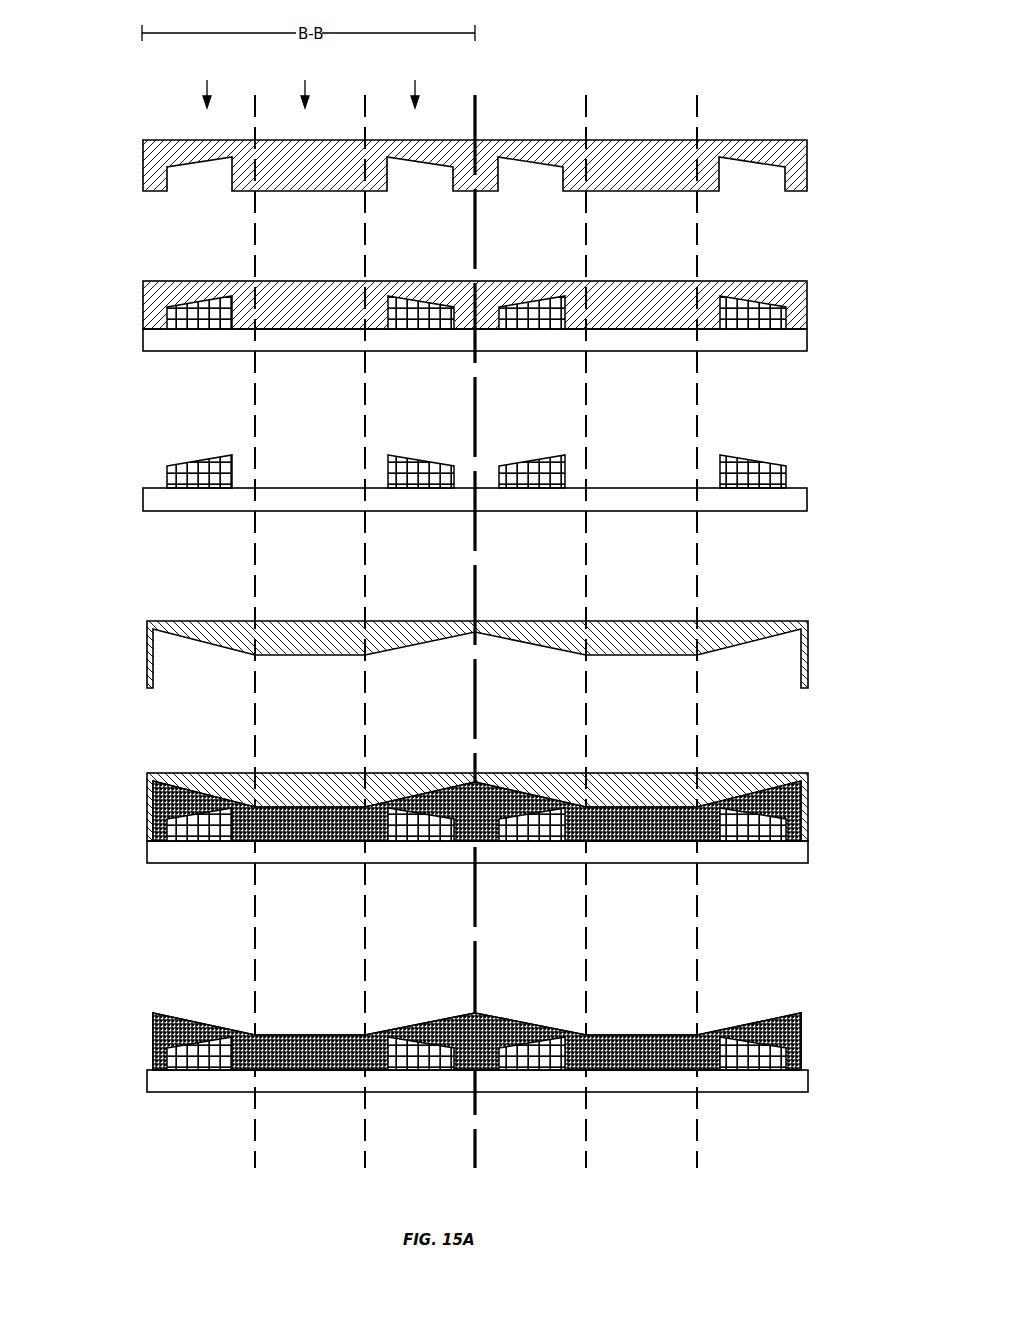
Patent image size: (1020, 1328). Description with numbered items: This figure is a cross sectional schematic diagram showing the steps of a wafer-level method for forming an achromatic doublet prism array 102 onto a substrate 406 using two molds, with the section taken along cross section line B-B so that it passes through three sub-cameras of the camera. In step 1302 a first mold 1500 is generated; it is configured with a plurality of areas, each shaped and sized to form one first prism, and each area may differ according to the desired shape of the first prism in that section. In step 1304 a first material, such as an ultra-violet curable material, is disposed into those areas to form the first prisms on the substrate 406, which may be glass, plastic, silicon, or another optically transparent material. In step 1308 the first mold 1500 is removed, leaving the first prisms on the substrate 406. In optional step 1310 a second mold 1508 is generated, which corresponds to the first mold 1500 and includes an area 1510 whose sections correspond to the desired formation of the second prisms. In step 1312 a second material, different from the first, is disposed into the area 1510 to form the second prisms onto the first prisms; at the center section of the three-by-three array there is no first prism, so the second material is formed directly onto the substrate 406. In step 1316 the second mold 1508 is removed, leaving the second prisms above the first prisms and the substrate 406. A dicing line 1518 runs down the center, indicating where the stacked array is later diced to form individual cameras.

The achromatic doublet prism array 102 is at (128, 1031).
The substrate 406 is at (838, 330).
The step of generating first mold 1302 is at (120, 115).
The step of forming first prisms 1304 is at (120, 268).
The step of removing first mold 1308 is at (120, 445).
The step of generating second mold 1310 is at (120, 605).
The step of forming second prisms 1312 is at (120, 770).
The step of removing second mold 1316 is at (120, 1010).
The first mold 1500 is at (810, 131).
The second mold 1508 is at (802, 622).
The area 1510 is at (217, 673).
The dicing line 1518 is at (476, 645).